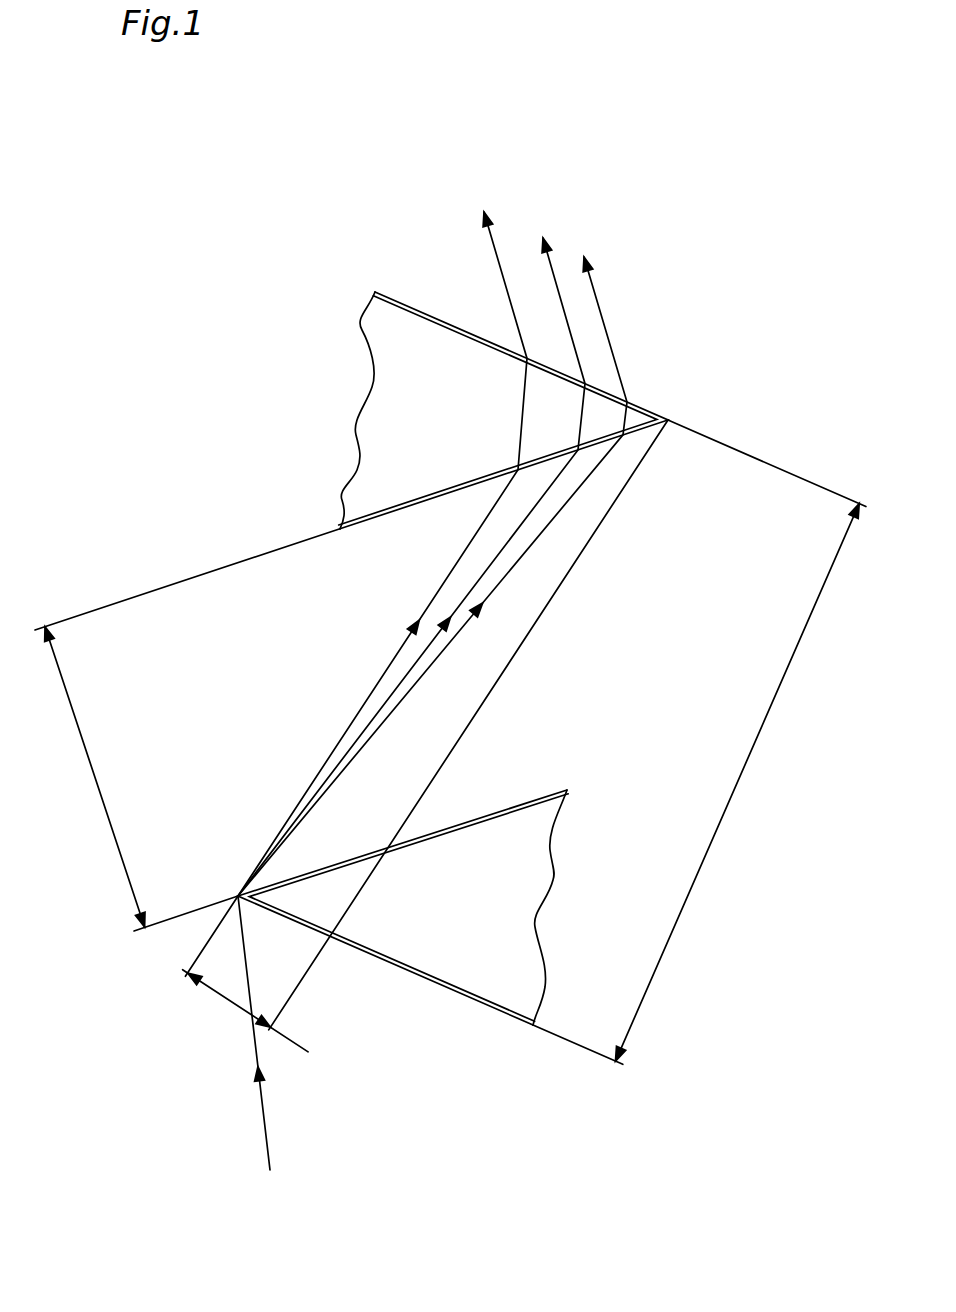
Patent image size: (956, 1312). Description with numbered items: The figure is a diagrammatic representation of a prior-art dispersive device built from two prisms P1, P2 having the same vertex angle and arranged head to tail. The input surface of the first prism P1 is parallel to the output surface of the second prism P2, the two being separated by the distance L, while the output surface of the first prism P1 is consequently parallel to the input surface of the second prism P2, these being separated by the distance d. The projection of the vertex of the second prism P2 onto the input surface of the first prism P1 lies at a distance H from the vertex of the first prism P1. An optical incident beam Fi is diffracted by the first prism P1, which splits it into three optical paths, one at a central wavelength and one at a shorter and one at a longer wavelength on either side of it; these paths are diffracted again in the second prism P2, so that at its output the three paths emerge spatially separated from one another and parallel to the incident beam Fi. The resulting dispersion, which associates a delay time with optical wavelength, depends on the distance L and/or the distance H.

The first prism P1 is at (492, 980).
The second prism P2 is at (397, 480).
The optical incident beam Fi is at (266, 1140).
The distance between output surface of P1 and input surface of P2 d is at (187, 730).
The distance between input surface of P1 and output surface of P2 L is at (699, 742).
The offset between prism vertices H is at (425, 736).